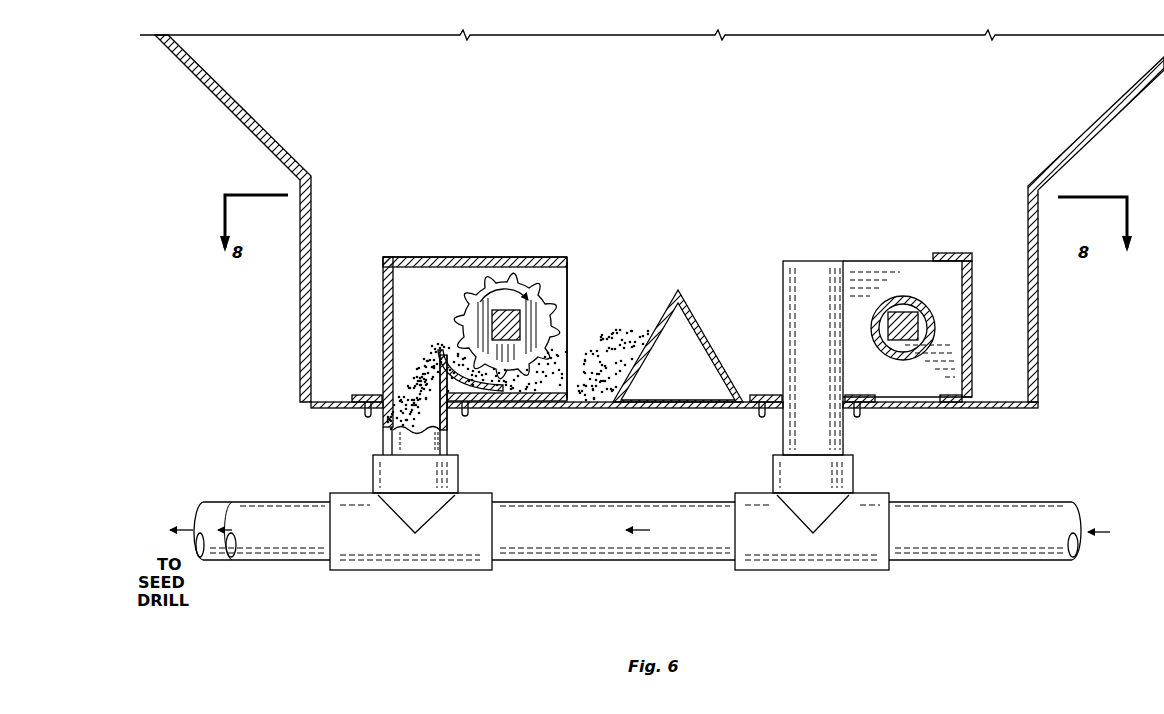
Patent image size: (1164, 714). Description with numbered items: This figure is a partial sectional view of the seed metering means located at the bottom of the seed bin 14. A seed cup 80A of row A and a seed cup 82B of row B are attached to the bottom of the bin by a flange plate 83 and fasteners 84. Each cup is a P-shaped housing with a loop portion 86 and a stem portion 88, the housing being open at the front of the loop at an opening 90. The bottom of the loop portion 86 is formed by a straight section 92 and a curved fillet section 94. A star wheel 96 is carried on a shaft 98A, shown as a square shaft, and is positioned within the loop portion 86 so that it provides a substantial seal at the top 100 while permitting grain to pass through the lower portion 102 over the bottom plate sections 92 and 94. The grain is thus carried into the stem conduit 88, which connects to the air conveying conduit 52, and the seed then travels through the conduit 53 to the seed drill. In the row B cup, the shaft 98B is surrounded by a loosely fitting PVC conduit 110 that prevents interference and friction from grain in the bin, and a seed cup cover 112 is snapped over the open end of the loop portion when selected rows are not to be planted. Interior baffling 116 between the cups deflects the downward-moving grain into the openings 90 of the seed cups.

The seed bin 14 is at (1105, 126).
The air conveying conduit 52 is at (575, 562).
The conduit 53 is at (226, 502).
The seed cup 80A is at (496, 341).
The seed cup 82B is at (898, 339).
The flange plate 83 is at (357, 395).
The fasteners 84 is at (366, 414).
The loop portion 86 is at (537, 300).
The stem portion 88 is at (447, 432).
The opening 90 is at (568, 305).
The straight section 92 is at (537, 401).
The curved fillet section 94 is at (473, 402).
The star wheel 96 is at (567, 258).
The shaft 98A is at (521, 332).
The shaft 98B is at (918, 330).
The top 100 is at (503, 272).
The lower portion 102 is at (500, 388).
The PVC conduit 110 is at (922, 316).
The seed cup cover 112 is at (965, 253).
The interior baffling 116 is at (688, 305).